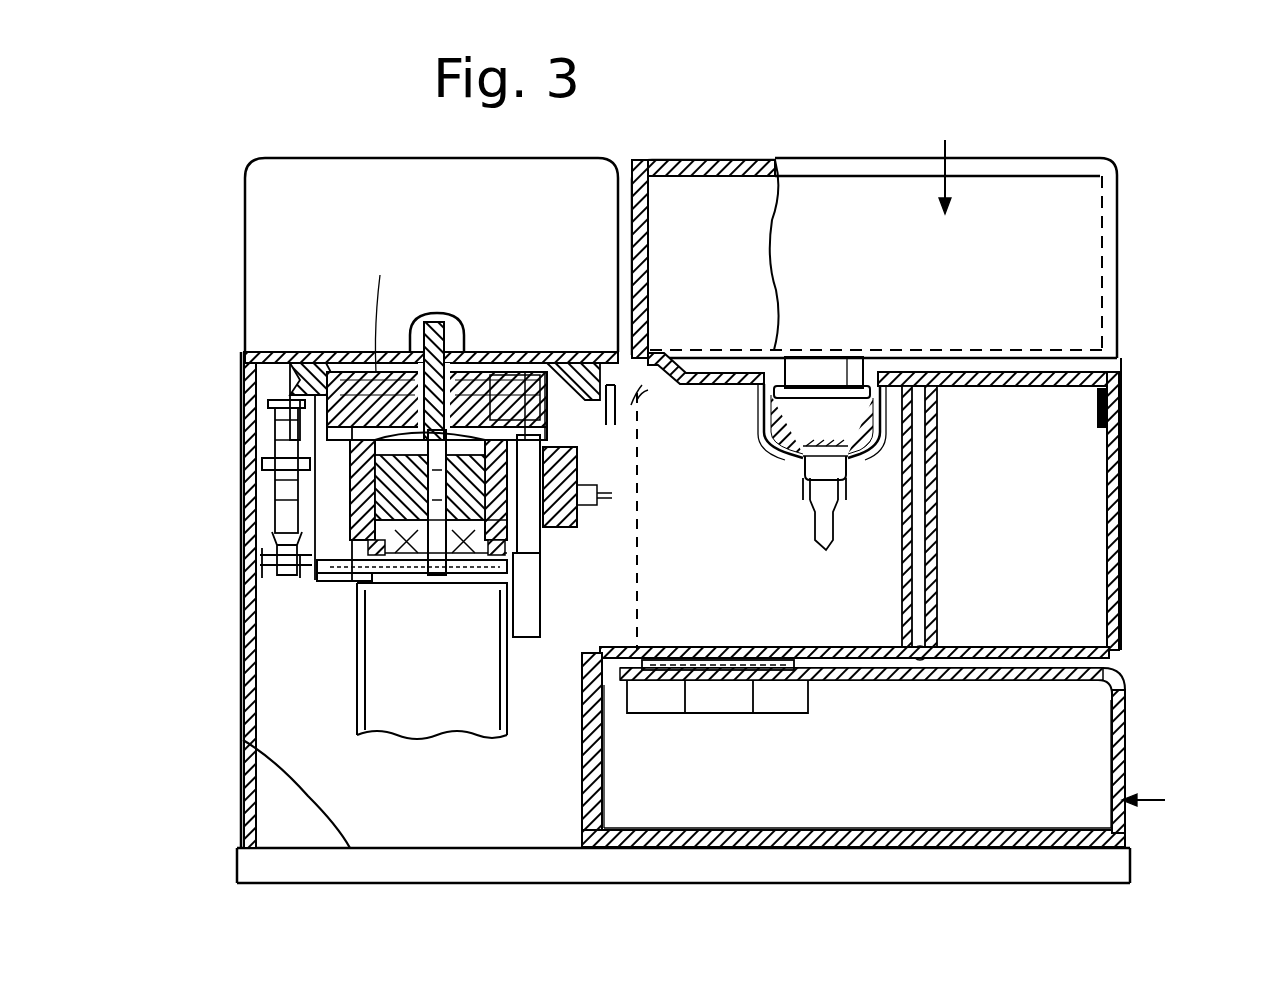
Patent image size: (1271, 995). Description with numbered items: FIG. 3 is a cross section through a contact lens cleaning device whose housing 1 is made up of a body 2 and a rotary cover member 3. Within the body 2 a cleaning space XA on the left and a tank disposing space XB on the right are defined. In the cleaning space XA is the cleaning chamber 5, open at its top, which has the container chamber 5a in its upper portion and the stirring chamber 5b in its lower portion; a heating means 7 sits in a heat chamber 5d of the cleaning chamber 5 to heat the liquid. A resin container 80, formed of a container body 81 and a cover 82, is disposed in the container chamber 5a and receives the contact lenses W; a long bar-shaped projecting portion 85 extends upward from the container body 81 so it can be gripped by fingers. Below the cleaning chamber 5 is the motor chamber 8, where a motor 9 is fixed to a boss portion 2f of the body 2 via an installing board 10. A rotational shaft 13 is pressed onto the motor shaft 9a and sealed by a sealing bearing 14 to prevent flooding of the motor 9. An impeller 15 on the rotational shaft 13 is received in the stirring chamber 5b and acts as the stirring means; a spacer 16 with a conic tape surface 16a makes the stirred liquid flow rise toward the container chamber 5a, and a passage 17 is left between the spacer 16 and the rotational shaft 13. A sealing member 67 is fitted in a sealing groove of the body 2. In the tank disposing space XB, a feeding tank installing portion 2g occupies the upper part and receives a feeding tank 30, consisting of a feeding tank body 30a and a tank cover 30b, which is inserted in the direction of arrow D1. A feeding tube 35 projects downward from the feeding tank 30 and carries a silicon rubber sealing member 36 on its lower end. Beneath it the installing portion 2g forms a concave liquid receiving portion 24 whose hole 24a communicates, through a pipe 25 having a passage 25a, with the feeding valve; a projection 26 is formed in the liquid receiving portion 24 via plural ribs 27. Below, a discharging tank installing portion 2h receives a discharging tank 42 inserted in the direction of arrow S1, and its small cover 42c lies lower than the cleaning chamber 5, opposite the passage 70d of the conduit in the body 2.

The housing 1 is at (242, 557).
The body 2 is at (244, 405).
The boss portion 2f is at (345, 578).
The feeding tank installing portion 2g is at (1040, 383).
The discharging tank installing portion 2h is at (1075, 858).
The cover member 3 is at (335, 172).
The cleaning chamber 5 is at (345, 392).
The container chamber 5a is at (362, 402).
The stirring chamber 5b is at (352, 425).
The heat chamber 5d is at (612, 432).
The heating means 7 is at (535, 562).
The motor chamber 8 is at (325, 713).
The motor 9 is at (425, 722).
The motor shaft 9a is at (437, 590).
The installing board 10 is at (360, 575).
The rotational shaft 13 is at (410, 585).
The sealing bearing 14 is at (452, 588).
The impeller 15 is at (515, 470).
The spacer 16 is at (385, 500).
The conic tape surface 16a is at (380, 478).
The passage 17 is at (520, 500).
The liquid receiving portion 24 is at (768, 418).
The hole 24a is at (822, 485).
The pipe 25 is at (826, 550).
The passage 25a is at (815, 525).
The projection 26 is at (846, 462).
The ribs 27 is at (805, 452).
The feeding tank 30 is at (1075, 332).
The feeding tank body 30a is at (1080, 275).
The tank cover 30b is at (656, 163).
The feeding tube 35 is at (816, 366).
The sealing member 36 is at (840, 398).
The discharging tank 42 is at (1085, 770).
The small cover 42c is at (740, 684).
The sealing member 67 is at (566, 368).
The passage 70d is at (718, 672).
The container 80 is at (452, 340).
The container body 81 is at (538, 393).
The cover 82 is at (500, 385).
The projecting portion 85 is at (432, 330).
The arrow D1 is at (960, 155).
The arrow S1 is at (1161, 800).
The contact lens W is at (652, 420).
The cleaning space XA is at (260, 697).
The tank disposing space XB is at (1060, 632).